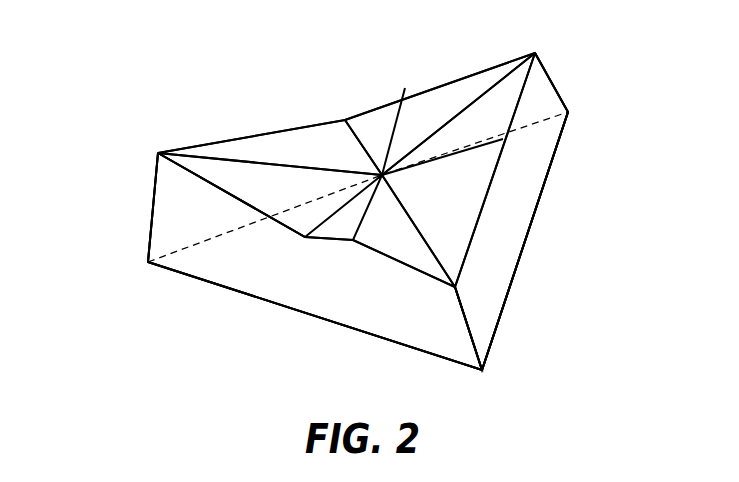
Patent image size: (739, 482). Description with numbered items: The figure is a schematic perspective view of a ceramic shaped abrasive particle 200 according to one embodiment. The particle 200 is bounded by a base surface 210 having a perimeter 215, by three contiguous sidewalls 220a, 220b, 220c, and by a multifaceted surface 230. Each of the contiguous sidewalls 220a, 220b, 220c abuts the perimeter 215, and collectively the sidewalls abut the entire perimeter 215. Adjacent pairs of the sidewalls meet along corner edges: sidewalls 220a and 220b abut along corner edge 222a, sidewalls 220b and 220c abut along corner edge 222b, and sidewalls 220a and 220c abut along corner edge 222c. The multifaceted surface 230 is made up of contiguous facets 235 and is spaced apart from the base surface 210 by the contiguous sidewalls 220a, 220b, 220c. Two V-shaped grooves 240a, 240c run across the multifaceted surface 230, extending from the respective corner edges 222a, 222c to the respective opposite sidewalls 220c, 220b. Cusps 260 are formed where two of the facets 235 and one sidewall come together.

The ceramic shaped abrasive particle 200 is at (157, 50).
The base surface 210 is at (528, 237).
The perimeter 215 is at (543, 193).
The contiguous sidewall 220a is at (527, 147).
The contiguous sidewall 220b is at (230, 138).
The contiguous sidewall 220c is at (232, 257).
The corner edge 222a is at (557, 80).
The corner edge 222b is at (152, 207).
The corner edge 222c is at (467, 327).
The multifaceted surface 230 is at (382, 112).
The contiguous facets 235 is at (298, 187).
The V-shaped groove 240a is at (512, 67).
The V-shaped groove 240c is at (443, 264).
The cusps 260 is at (405, 88).